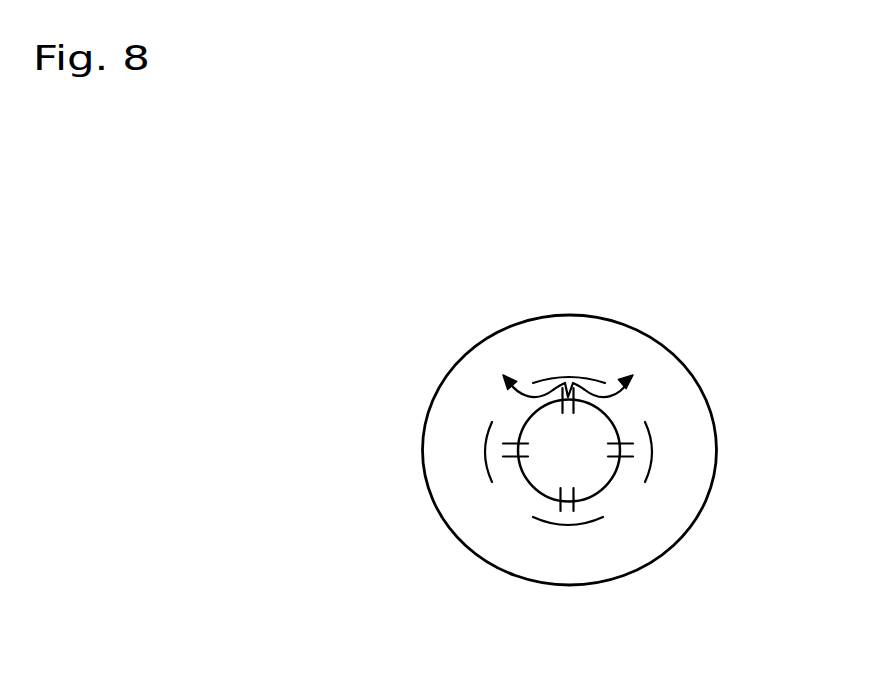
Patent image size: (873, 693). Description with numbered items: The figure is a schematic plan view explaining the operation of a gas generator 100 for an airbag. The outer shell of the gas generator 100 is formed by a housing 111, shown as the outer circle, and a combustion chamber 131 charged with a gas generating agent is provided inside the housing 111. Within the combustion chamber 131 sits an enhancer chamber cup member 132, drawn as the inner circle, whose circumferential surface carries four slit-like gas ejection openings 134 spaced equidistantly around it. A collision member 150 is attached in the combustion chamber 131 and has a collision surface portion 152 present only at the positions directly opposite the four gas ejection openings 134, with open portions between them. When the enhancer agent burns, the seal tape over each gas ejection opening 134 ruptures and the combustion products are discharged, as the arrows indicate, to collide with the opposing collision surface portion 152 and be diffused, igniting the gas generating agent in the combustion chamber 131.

The gas generator 100 is at (582, 303).
The housing 111 is at (455, 373).
The combustion chamber 131 is at (485, 538).
The enhancer chamber cup member 132 is at (597, 466).
The slit-like gas ejection opening 134 is at (625, 453).
The collision member 150 is at (657, 448).
The collision surface portion 152 is at (486, 451).